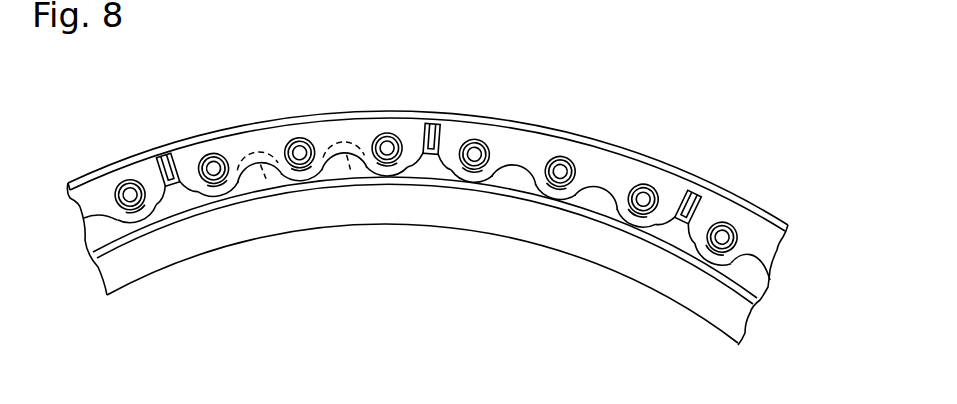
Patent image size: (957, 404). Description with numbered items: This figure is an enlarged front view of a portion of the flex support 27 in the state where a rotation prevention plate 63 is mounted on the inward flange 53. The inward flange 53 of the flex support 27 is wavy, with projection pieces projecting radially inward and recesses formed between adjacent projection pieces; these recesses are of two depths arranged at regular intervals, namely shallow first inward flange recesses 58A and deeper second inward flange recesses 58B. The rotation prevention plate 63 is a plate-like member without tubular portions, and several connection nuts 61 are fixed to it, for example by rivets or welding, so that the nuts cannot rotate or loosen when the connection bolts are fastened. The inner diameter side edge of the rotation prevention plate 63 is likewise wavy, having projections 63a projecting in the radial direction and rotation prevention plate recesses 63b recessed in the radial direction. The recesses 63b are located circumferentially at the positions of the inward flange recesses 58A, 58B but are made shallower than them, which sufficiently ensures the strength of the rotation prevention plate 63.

The inward flange 53 is at (427, 200).
The flex support 27 is at (425, 260).
The connection nut 61 is at (212, 168).
The rotation prevention plate 63 is at (427, 185).
The projection 63a is at (216, 198).
The rotation prevention plate recess 63b is at (333, 158).
The first inward flange recess 58A is at (250, 176).
The second inward flange recess 58B is at (170, 183).